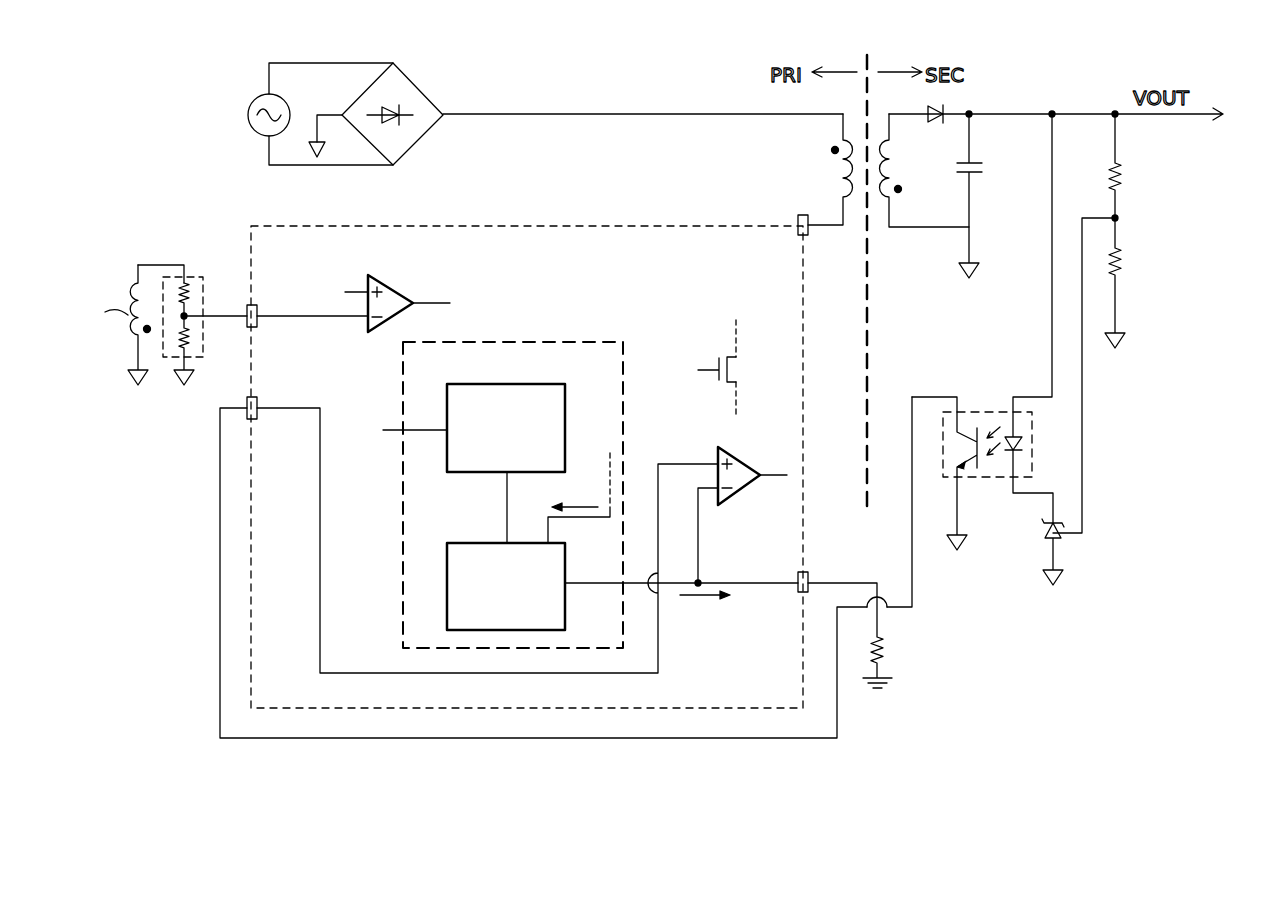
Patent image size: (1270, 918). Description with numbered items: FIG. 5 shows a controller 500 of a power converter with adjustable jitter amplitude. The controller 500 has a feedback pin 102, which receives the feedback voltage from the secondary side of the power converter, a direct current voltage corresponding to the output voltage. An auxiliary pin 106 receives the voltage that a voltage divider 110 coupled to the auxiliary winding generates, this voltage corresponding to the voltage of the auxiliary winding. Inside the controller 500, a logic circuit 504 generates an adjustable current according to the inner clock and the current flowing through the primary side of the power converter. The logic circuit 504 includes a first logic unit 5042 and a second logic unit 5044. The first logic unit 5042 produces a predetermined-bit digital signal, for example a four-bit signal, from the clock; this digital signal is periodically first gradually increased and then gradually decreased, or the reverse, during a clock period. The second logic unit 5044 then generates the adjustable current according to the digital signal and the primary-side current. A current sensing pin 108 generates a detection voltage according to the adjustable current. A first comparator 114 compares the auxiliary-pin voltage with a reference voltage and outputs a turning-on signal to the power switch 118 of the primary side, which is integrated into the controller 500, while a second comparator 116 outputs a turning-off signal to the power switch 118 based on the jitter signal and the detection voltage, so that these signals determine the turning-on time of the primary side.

The controller 500 is at (581, 225).
The logic circuit 504 is at (587, 342).
The first logic unit 5042 is at (505, 384).
The second logic unit 5044 is at (493, 543).
The feedback pin 102 is at (257, 418).
The auxiliary pin 106 is at (257, 328).
The current sensing pin 108 is at (808, 575).
The voltage divider 110 is at (193, 275).
The first comparator 114 is at (393, 286).
The second comparator 116 is at (740, 492).
The power switch 118 is at (740, 370).